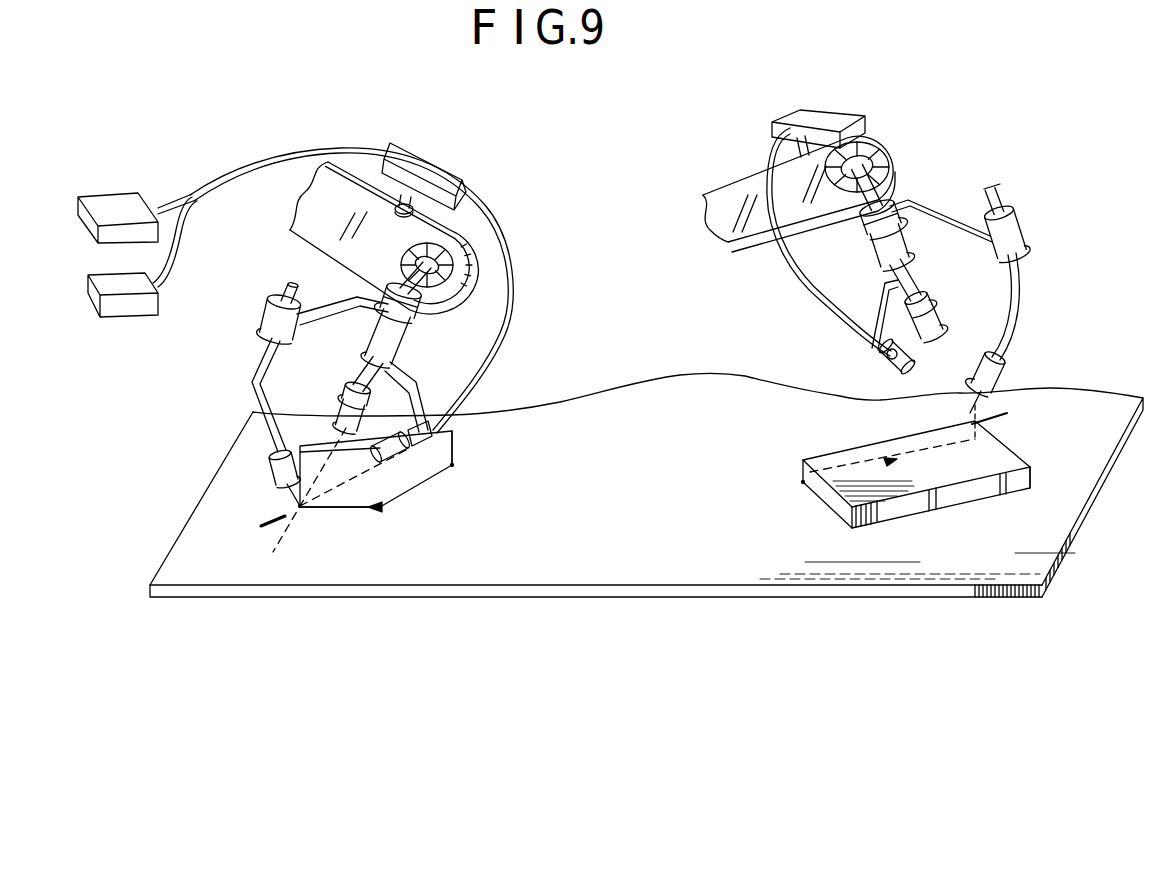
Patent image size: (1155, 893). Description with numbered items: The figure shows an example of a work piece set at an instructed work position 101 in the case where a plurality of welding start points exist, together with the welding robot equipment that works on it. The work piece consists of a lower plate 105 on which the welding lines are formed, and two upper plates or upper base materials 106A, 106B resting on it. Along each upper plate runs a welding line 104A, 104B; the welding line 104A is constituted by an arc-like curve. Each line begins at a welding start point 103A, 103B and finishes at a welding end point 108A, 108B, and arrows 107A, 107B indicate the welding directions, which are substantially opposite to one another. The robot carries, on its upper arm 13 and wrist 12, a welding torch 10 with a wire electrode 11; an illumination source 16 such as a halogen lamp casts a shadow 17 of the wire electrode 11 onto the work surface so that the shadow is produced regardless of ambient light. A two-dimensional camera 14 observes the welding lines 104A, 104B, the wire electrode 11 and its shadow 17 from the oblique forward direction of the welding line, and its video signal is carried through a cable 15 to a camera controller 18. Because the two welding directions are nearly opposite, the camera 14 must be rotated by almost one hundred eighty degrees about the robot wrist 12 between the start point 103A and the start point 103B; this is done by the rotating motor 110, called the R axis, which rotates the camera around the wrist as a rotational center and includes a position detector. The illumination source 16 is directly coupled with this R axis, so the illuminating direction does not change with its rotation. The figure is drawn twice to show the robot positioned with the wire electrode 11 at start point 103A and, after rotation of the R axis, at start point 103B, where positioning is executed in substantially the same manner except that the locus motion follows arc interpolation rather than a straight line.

The welding torch 10 is at (250, 383).
The wire electrode 11 is at (293, 500).
The wrist of the robot 12 is at (432, 301).
The upper arm of the robot 13 is at (327, 205).
The two-dimensional camera 14 is at (407, 467).
The cable 15 is at (513, 237).
The illumination source 16 is at (345, 401).
The shadow of the wire electrode 17 is at (265, 518).
The camera controller 18 is at (442, 170).
The rotating motor (R axis) 110 is at (408, 352).
The instructed work position 101 is at (891, 593).
The lower plate 105 is at (655, 560).
The welding start point 103A is at (302, 512).
The welding line 104A is at (423, 485).
The upper plate 106A is at (447, 448).
The arrow indicating the welding direction 107A is at (382, 512).
The welding end point 108A is at (452, 463).
The welding start point 103B is at (975, 440).
The welding line 104B is at (833, 467).
The upper plate 106B is at (932, 477).
The arrow indicating the welding direction 107B is at (880, 468).
The welding end point 108B is at (803, 484).